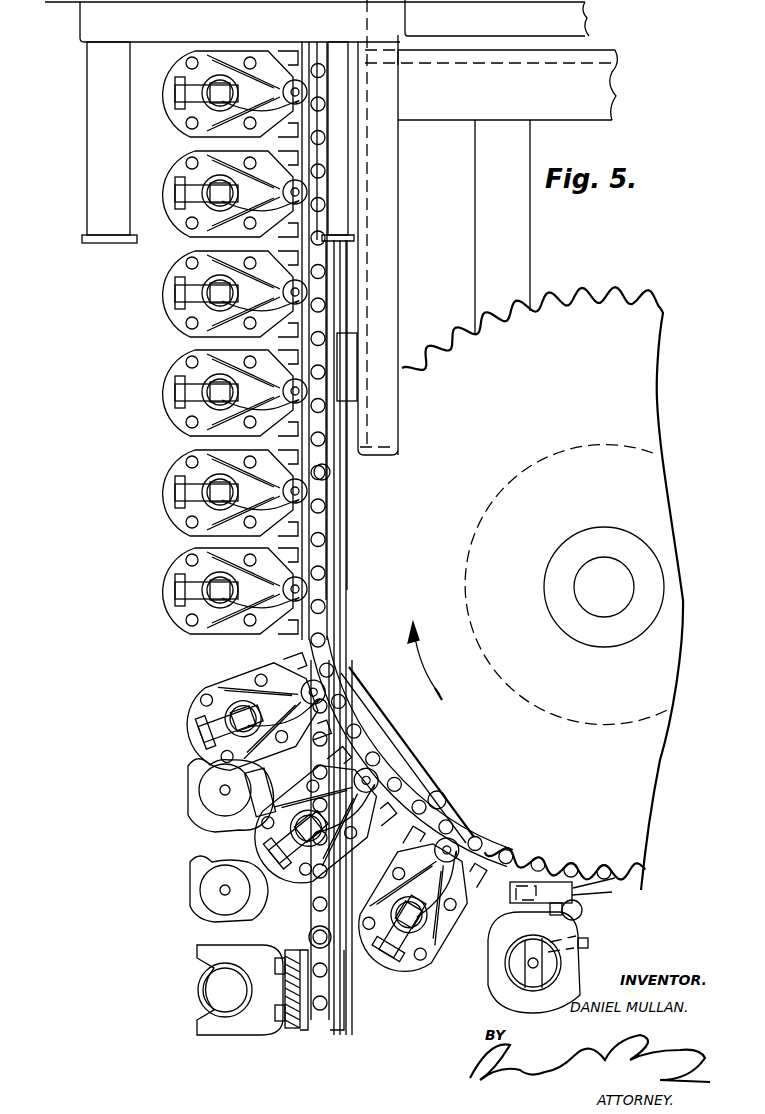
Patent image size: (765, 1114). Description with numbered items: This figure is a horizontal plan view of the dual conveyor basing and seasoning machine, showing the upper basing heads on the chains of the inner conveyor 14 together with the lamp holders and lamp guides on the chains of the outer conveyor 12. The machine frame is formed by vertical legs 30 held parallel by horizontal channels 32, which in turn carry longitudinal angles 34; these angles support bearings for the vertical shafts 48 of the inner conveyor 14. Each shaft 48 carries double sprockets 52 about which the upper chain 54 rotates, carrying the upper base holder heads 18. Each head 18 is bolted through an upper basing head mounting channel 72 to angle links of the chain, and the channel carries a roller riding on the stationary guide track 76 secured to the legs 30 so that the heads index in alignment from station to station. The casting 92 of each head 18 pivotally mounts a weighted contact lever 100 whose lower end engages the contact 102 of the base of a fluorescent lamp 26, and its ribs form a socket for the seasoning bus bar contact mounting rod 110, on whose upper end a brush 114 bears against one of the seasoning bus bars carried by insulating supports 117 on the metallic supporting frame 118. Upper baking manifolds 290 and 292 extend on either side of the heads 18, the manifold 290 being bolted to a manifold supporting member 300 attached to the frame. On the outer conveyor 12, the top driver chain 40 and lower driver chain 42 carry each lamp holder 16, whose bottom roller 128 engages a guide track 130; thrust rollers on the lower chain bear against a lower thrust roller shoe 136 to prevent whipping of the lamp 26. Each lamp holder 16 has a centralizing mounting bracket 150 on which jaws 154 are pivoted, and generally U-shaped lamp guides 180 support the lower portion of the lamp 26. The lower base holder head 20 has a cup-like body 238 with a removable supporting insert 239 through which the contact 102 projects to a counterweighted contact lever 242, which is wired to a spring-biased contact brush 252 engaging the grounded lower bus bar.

The manifold supporting member 300 is at (85, 22).
The upper baking manifold 290 is at (100, 180).
The horizontal channel 32 is at (616, 64).
The vertical leg 30 is at (400, 46).
The metallic supporting frame 118 is at (390, 241).
The longitudinal angle 34 is at (515, 252).
The upper baking manifold 292 is at (345, 180).
The stationary guide track 76 is at (346, 528).
The insulating support 117 is at (346, 338).
The casting 92 is at (185, 344).
The upper base holder head 18 is at (170, 476).
The weighted contact lever 100 is at (178, 578).
The seasoning bus bar contact mounting rod 110 is at (328, 566).
The upper basing head mounting channel 72 is at (330, 473).
The brush 114 is at (332, 626).
The inner conveyor 14 is at (440, 798).
The outer conveyor 12 is at (344, 940).
The top driver chain 40 is at (310, 936).
The guide track 130 is at (347, 1032).
The bottom roller 128 is at (322, 1030).
The double sprocket 52 is at (618, 296).
The upper chain 54 is at (498, 836).
The vertical shaft 48 is at (606, 556).
The fluorescent lamp 26 is at (212, 788).
The jaw 154 is at (216, 838).
The centralizing mounting bracket 150 is at (215, 922).
The contact 102 is at (172, 806).
The lamp holder 16 is at (185, 842).
The lower driver chain 42 is at (302, 1032).
The lamp guide 180 is at (210, 1036).
The lower thrust roller shoe 136 is at (582, 910).
The contact brush 252 is at (580, 906).
The lower base holder head 20 is at (486, 986).
The cup-like body 238 is at (490, 962).
The supporting insert 239 is at (542, 945).
The counterweighted contact lever 242 is at (588, 944).